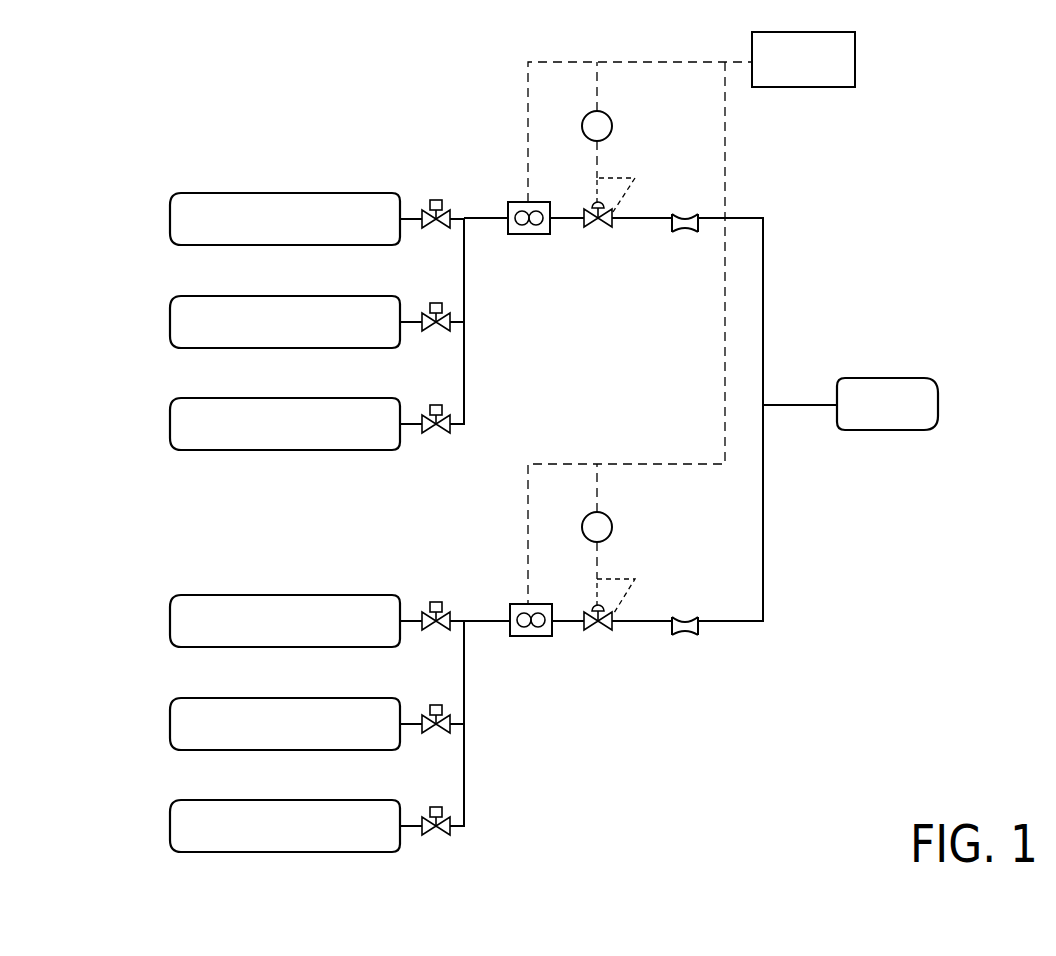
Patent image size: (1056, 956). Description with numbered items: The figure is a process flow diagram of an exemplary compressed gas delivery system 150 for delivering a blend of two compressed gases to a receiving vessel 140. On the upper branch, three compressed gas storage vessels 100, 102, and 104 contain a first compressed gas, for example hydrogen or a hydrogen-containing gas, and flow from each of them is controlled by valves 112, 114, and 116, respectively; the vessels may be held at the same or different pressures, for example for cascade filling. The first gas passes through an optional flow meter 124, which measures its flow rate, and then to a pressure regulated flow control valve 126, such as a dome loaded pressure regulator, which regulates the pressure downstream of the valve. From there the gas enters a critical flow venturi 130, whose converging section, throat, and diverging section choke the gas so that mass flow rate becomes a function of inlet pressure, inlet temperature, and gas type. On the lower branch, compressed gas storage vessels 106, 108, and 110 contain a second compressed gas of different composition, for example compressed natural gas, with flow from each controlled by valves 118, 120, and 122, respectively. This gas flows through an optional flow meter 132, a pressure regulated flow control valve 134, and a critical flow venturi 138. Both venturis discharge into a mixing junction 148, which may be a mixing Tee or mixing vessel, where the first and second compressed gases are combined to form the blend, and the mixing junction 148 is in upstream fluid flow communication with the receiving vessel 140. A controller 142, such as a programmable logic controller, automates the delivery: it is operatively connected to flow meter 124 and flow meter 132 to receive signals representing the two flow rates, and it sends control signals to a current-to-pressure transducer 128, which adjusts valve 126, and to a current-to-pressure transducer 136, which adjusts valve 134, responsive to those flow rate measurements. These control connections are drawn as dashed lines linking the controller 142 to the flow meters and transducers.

The compressed gas storage vessel 100 is at (265, 231).
The compressed gas storage vessel 102 is at (265, 334).
The compressed gas storage vessel 104 is at (265, 436).
The compressed gas storage vessel 106 is at (265, 633).
The compressed gas storage vessel 108 is at (265, 736).
The compressed gas storage vessel 110 is at (265, 838).
The valve 112 is at (432, 230).
The valve 114 is at (432, 333).
The valve 116 is at (437, 435).
The valve 118 is at (432, 632).
The valve 120 is at (432, 735).
The valve 122 is at (437, 837).
The flow meter 124 is at (520, 234).
The pressure regulated flow control valve 126 is at (593, 228).
The current-to-pressure transducer 128 is at (611, 120).
The critical flow venturi 130 is at (685, 233).
The flow meter 132 is at (525, 637).
The pressure regulated flow control valve 134 is at (593, 631).
The current-to-pressure transducer 136 is at (611, 521).
The critical flow venturi 138 is at (685, 636).
The receiving vessel 140 is at (867, 416).
The controller 142 is at (783, 72).
The mixing junction 148 is at (763, 405).
The compressed gas delivery system 150 is at (298, 95).